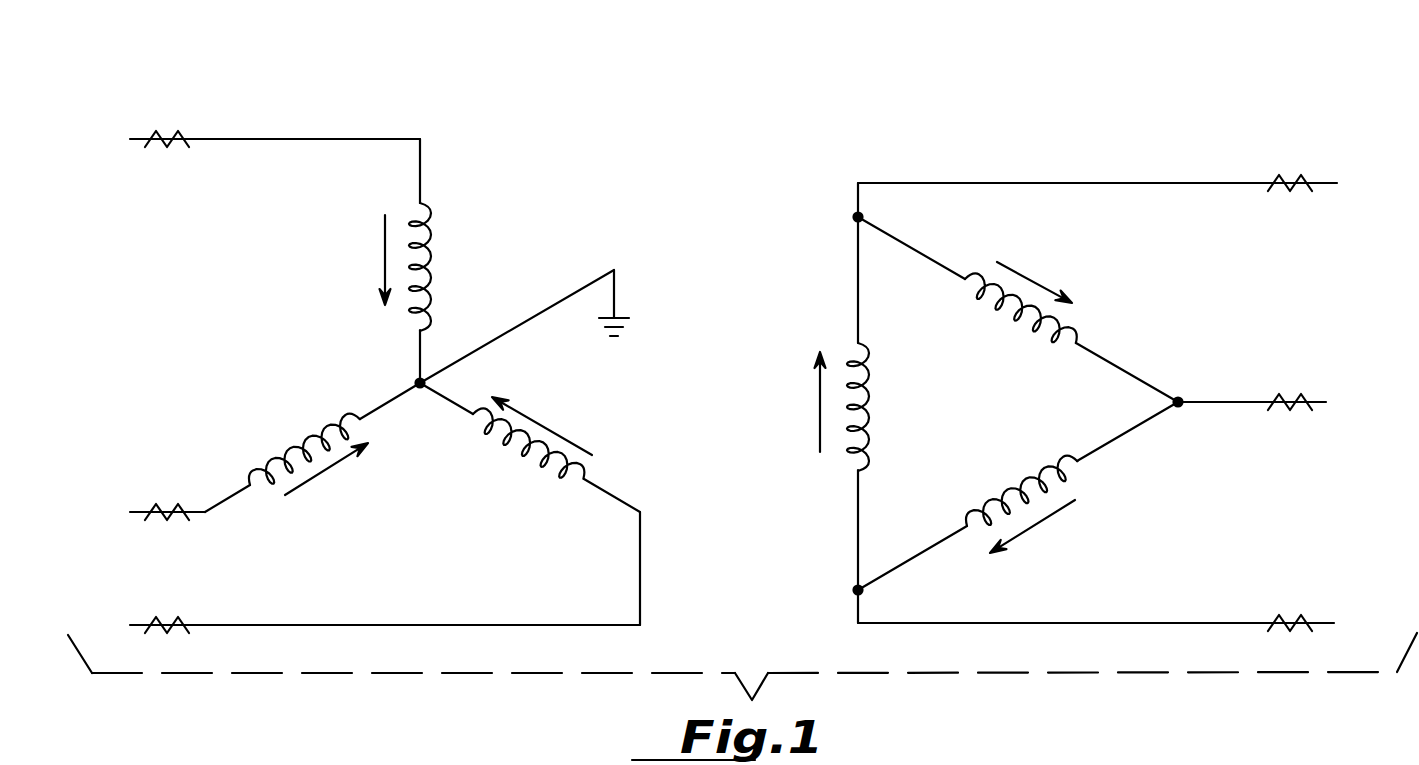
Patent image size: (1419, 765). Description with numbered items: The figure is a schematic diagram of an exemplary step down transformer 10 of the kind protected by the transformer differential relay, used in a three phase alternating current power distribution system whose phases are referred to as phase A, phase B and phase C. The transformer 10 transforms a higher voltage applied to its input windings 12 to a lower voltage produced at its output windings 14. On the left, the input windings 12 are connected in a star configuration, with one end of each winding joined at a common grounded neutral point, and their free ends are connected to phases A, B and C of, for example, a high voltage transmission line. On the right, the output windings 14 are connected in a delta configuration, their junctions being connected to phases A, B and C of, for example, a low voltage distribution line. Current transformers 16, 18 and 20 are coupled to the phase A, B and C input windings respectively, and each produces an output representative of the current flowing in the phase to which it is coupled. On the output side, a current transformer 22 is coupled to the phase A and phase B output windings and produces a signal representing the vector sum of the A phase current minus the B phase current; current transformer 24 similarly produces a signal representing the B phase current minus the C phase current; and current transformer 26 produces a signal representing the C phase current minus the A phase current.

The step down transformer 10 is at (706, 124).
The input windings 12 is at (465, 120).
The output windings 14 is at (836, 184).
The current transformer 16 is at (160, 133).
The current transformer 18 is at (180, 621).
The current transformer 20 is at (180, 508).
The current transformer 22 is at (1296, 175).
The current transformer 24 is at (1298, 395).
The current transformer 26 is at (1305, 615).